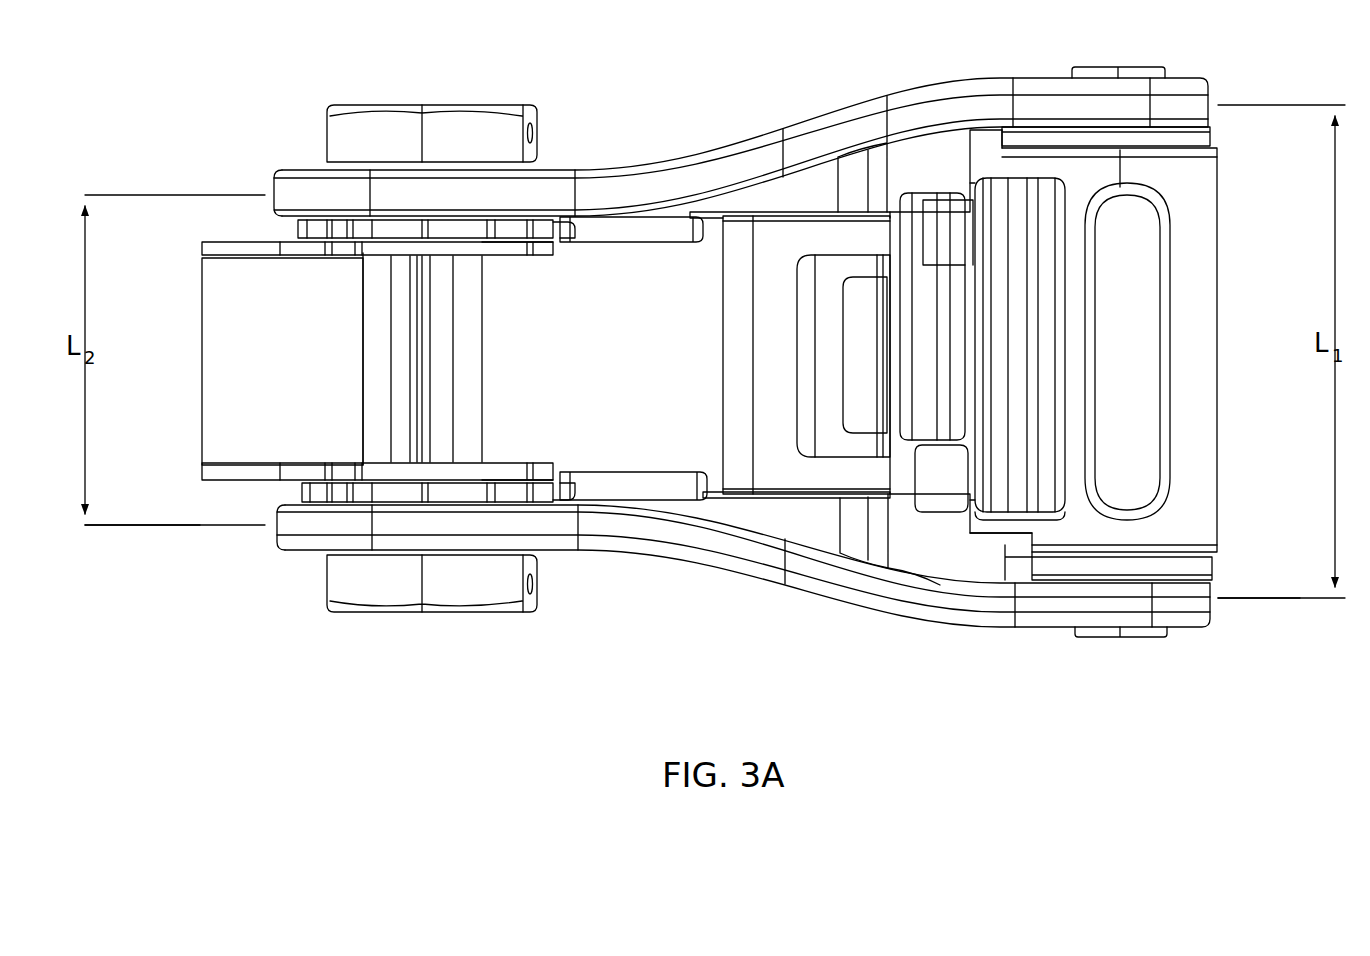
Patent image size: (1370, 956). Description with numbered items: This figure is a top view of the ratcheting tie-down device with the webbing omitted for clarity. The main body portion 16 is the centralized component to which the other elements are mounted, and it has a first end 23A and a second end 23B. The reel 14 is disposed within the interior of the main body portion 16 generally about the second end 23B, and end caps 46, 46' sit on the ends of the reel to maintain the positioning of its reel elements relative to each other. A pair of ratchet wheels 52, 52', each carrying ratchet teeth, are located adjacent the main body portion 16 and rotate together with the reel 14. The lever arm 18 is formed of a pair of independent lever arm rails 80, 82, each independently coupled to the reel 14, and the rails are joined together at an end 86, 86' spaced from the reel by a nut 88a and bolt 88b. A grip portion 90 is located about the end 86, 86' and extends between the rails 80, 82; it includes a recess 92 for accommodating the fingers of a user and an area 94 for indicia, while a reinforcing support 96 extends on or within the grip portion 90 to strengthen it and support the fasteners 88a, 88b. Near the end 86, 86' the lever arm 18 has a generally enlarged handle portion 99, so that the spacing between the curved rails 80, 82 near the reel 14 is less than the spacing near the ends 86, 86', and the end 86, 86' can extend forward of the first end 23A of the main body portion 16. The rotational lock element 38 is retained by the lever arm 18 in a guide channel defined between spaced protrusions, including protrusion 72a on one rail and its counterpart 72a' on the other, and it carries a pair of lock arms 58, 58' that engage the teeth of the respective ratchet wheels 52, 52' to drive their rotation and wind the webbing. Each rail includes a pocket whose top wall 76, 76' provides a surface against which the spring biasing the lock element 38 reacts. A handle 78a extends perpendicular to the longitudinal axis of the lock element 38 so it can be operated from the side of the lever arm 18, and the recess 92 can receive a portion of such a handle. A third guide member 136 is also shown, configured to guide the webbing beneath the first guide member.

The reel 14 is at (366, 336).
The main body portion 16 is at (203, 247).
The lever arm 18 is at (938, 658).
The first end 23A is at (1217, 635).
The second end 23B is at (196, 550).
The rotational lock element 38 is at (697, 370).
The end cap 46 is at (432, 609).
The end cap 46' is at (432, 113).
The ratchet wheel 52 is at (402, 496).
The ratchet wheel 52' is at (401, 226).
The rotational lock arm 58 is at (520, 426).
The rotational lock arm 58' is at (522, 293).
The spaced protrusion 72a is at (633, 464).
The spaced protrusion 72a' is at (631, 251).
The top wall 76 is at (885, 577).
The top wall 76' is at (884, 135).
The handle 78a is at (925, 300).
The independent lever arm rail 80 is at (660, 535).
The independent lever arm rail 82 is at (655, 185).
The end 86 is at (1233, 640).
The end 86' is at (1237, 65).
The nut 88a is at (1100, 637).
The bolt 88b is at (1140, 67).
The grip portion 90 is at (1215, 190).
The recess 92 is at (1040, 212).
The area for indicia 94 is at (1132, 282).
The reinforcing support 96 is at (1215, 132).
The enlarged handle portion 99 is at (952, 568).
The third guide member 136 is at (850, 356).